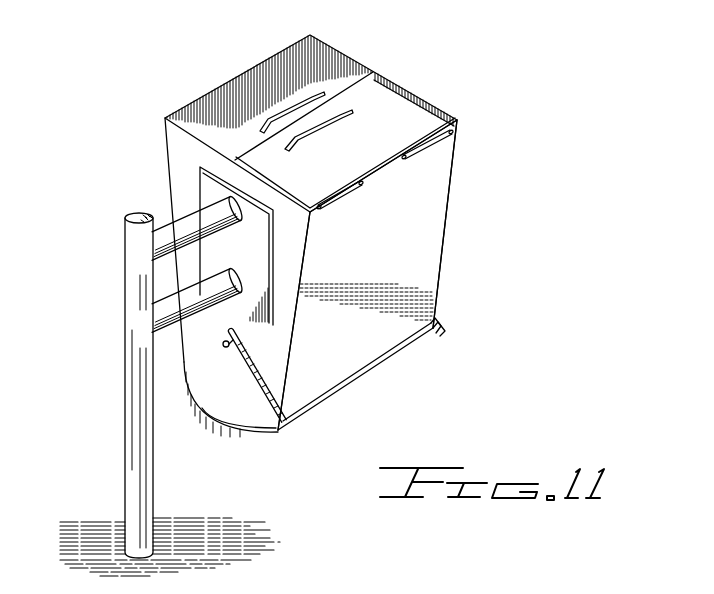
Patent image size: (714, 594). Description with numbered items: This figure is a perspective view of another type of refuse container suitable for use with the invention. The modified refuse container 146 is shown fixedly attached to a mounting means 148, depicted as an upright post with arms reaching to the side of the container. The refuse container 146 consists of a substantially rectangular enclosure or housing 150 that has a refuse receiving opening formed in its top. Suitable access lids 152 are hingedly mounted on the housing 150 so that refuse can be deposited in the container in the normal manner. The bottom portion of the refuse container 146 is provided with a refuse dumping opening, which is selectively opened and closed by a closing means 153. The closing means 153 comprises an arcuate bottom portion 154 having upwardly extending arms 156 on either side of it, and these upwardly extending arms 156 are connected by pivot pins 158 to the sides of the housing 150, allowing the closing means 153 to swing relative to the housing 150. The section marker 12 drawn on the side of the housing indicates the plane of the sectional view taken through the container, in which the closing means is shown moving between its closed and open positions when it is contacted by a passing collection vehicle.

The section line for FIG. 12 is at (385, 232).
The refuse container 146 is at (451, 173).
The mounting means 148 is at (137, 211).
The housing 150 is at (447, 222).
The access lids 152 is at (371, 79).
The closing means 153 is at (275, 436).
The arcuate bottom portion 154 is at (437, 343).
The upwardly extending arms 156 is at (217, 411).
The pivot pins 158 is at (237, 346).